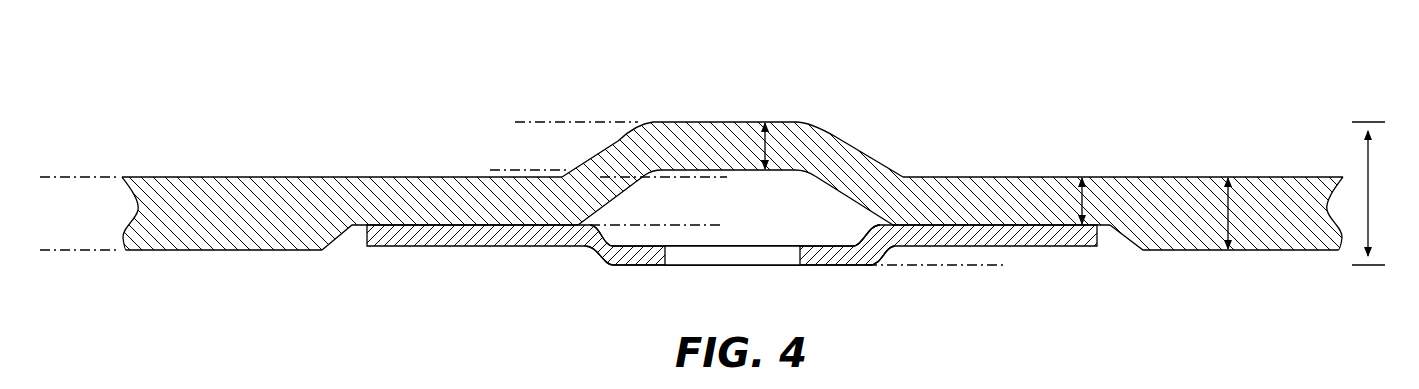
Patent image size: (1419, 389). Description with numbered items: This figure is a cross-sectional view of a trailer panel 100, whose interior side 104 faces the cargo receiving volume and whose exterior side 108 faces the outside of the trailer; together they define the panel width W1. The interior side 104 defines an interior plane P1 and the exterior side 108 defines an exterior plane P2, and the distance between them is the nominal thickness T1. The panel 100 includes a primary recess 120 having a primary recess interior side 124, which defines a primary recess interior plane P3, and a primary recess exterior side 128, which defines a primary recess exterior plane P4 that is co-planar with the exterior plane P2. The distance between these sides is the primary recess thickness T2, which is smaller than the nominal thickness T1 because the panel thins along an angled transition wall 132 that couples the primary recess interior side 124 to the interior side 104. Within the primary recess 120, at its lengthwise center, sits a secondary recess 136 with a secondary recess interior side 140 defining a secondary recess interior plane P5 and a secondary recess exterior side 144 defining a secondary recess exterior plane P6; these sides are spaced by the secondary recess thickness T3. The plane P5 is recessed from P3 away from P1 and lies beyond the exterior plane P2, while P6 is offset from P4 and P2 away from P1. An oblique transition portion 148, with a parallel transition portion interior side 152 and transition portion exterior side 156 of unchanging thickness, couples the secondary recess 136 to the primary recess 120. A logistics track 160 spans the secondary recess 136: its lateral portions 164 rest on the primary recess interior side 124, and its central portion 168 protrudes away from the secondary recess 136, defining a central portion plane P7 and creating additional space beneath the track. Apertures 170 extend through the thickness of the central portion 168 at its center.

The panel 100 is at (265, 76).
The interior side 104 is at (221, 251).
The exterior side 108 is at (213, 177).
The primary recess 120 is at (418, 224).
The primary recess interior side 124 is at (1010, 224).
The primary recess exterior side 128 is at (952, 176).
The transition wall 132 is at (1132, 248).
The secondary recess 136 is at (752, 155).
The secondary recess interior side 140 is at (778, 173).
The secondary recess exterior side 144 is at (793, 121).
The transition portion 148 is at (865, 136).
The transition portion interior side 152 is at (857, 204).
The transition portion exterior side 156 is at (834, 126).
The logistics track 160 is at (719, 278).
The lateral portions 164 is at (739, 278).
The central portion 168 is at (853, 267).
The apertures 170 is at (700, 266).
The interior plane P1 is at (98, 246).
The exterior plane P2 is at (98, 174).
The primary recess interior plane P3 is at (640, 224).
The primary recess exterior plane P4 is at (700, 179).
The secondary recess interior plane P5 is at (513, 168).
The secondary recess exterior plane P6 is at (558, 121).
The central portion plane P7 is at (968, 266).
The nominal thickness T1 is at (1230, 207).
The primary recess thickness T2 is at (1087, 200).
The secondary recess thickness T3 is at (780, 121).
The panel width W1 is at (1369, 200).